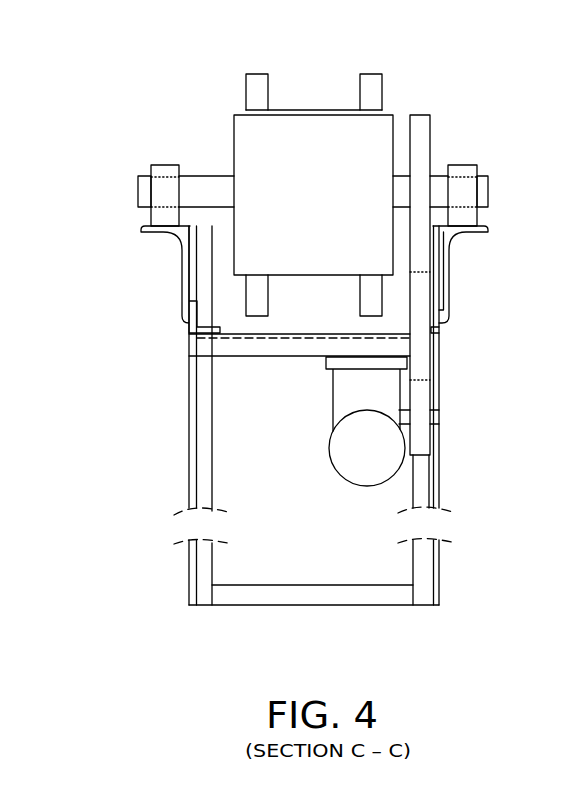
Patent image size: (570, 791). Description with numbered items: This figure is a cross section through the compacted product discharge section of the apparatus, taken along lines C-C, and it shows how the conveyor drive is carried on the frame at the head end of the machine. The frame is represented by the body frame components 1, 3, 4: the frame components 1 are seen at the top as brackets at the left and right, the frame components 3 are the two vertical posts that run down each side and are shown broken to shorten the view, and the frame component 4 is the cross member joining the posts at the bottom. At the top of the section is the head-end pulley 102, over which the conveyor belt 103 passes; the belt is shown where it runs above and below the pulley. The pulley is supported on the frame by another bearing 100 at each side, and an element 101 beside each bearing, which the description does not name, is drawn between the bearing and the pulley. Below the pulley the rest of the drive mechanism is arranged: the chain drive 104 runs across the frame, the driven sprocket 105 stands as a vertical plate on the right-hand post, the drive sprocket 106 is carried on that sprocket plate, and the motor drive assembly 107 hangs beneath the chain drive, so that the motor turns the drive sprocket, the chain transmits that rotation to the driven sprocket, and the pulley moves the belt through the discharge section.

The body frame component 1 is at (180, 280).
The body frame component 3 is at (188, 504).
The body frame component 4 is at (267, 585).
The bearing 100 is at (160, 165).
The bolt 101 is at (213, 176).
The head-end pulley 102 is at (234, 135).
The conveyor belt 103 is at (375, 73).
The chain drive 104 is at (437, 347).
The driven sprocket 105 is at (433, 114).
The drive sprocket 106 is at (441, 381).
The motor drive assembly 107 is at (328, 453).